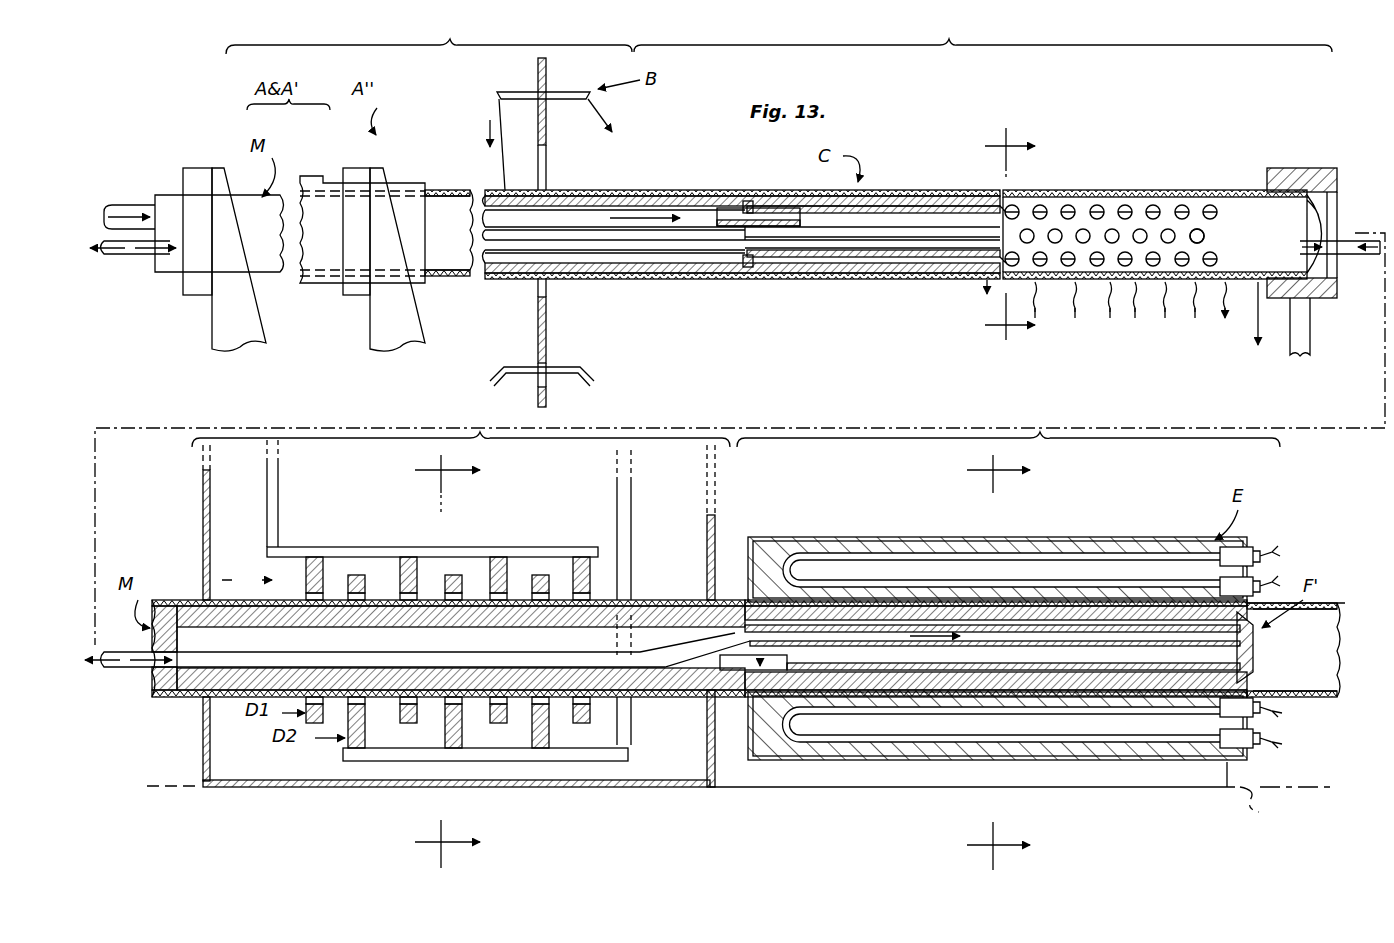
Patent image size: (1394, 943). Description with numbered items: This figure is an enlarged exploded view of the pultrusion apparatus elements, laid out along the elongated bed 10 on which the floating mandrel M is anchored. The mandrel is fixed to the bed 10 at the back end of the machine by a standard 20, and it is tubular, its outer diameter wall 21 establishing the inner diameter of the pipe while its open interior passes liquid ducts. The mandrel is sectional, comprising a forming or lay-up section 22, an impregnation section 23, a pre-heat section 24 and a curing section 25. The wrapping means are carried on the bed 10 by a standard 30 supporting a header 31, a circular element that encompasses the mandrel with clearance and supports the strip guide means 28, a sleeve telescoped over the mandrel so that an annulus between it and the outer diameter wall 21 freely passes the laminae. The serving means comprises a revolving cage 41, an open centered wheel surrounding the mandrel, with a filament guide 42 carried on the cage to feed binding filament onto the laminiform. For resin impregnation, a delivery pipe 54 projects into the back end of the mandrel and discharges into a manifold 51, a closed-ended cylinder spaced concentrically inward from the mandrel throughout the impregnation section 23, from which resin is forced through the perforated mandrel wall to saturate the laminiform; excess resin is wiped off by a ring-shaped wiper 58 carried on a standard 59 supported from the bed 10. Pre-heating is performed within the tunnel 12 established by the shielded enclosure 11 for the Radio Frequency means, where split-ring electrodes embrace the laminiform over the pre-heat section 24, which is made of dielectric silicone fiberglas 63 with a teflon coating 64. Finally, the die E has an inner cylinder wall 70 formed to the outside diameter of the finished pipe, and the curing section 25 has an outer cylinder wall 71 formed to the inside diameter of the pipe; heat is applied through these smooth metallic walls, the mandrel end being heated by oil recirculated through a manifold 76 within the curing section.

The elongated bed 10 is at (1020, 792).
The shielded enclosure 11 is at (203, 518).
The tunnel 12 is at (247, 579).
The standard 20 is at (222, 322).
The outer diameter wall 21 is at (462, 262).
The forming or lay-up section 22 is at (429, 55).
The impregnation section 23 is at (983, 57).
The pre-heat section 24 is at (461, 449).
The curing section 25 is at (1008, 447).
The strip guide means 28 is at (430, 188).
The standard 30 is at (378, 322).
The header 31 is at (356, 168).
The revolving cage 41 is at (548, 138).
The filament guide 42 is at (495, 96).
The manifold 51 is at (850, 222).
The delivery pipe 54 is at (138, 204).
The ring-shaped wiper 58 is at (1277, 168).
The standard 59 is at (1300, 345).
The silicone fiberglas 63 is at (688, 590).
The teflon coating 64 is at (645, 600).
The inner cylinder wall 70 is at (930, 690).
The outer cylinder wall 71 is at (745, 690).
The manifold 76 is at (1218, 667).